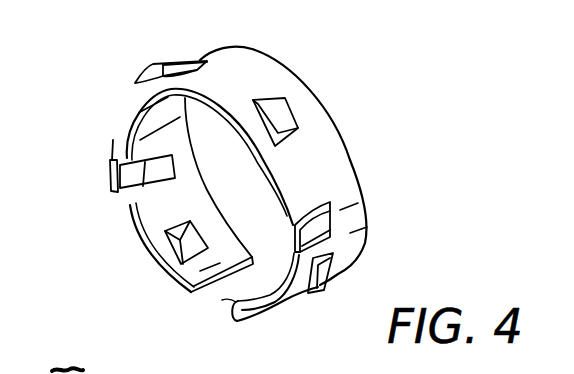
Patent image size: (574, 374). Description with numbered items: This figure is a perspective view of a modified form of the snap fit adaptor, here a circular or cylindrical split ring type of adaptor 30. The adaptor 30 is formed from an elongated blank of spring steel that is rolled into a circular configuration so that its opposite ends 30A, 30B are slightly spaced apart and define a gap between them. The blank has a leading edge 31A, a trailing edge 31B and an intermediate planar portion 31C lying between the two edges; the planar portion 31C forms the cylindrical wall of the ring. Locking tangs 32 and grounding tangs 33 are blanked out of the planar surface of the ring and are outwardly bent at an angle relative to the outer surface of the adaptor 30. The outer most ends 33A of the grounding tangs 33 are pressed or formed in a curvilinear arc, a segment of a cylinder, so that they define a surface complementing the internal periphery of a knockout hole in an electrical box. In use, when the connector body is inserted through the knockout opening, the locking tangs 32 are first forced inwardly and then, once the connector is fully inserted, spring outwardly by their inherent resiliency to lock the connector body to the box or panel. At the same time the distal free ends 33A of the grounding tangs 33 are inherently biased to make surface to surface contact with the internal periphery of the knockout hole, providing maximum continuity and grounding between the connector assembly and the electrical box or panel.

The split ring adaptor 30 is at (362, 144).
The end of adaptor 30A is at (223, 279).
The end of adaptor 30B is at (238, 313).
The leading edge 31A is at (291, 64).
The trailing edge 31B is at (165, 267).
The intermediate planar portion 31C is at (320, 170).
The locking tangs 32 is at (163, 64).
The grounding tangs 33 is at (162, 172).
The outer most ends of grounding tangs 33A is at (112, 191).